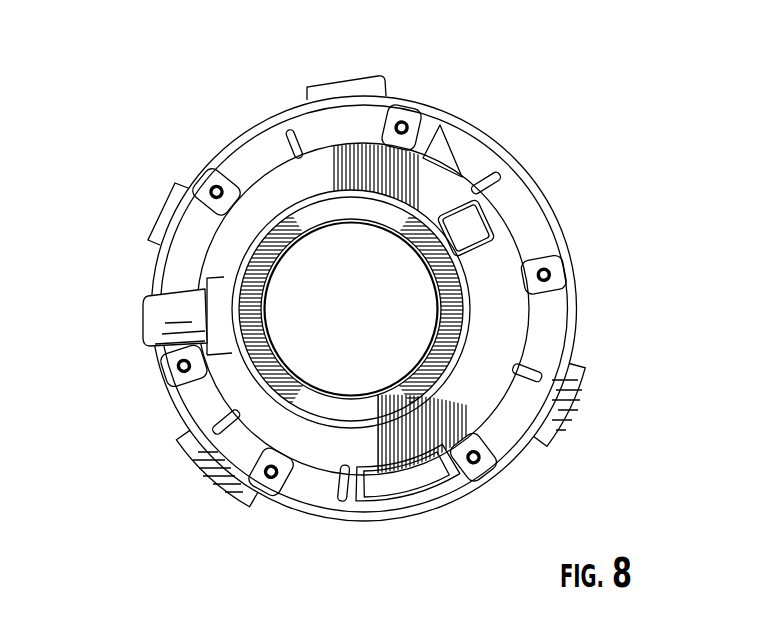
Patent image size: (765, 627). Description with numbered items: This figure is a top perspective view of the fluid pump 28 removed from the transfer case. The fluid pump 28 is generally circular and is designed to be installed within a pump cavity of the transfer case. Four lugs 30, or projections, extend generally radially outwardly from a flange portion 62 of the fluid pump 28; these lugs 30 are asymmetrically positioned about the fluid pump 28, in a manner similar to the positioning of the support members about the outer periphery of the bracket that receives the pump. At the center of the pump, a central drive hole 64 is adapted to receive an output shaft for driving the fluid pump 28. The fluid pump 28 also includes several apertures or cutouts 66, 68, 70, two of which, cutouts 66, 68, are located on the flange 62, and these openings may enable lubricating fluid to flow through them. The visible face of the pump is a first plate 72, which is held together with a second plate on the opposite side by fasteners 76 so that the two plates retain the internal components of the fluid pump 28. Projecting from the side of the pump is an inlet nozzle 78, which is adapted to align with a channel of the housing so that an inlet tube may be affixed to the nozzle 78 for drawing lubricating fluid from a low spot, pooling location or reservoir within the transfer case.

The fluid pump 28 is at (500, 330).
The lugs 30 is at (388, 85).
The flange portion 62 is at (528, 218).
The central drive hole 64 is at (347, 347).
The cutout 66 is at (415, 478).
The cutout 68 is at (445, 152).
The cutout 70 is at (467, 235).
The first plate 72 is at (268, 138).
The fasteners 76 is at (474, 458).
The inlet nozzle 78 is at (157, 293).